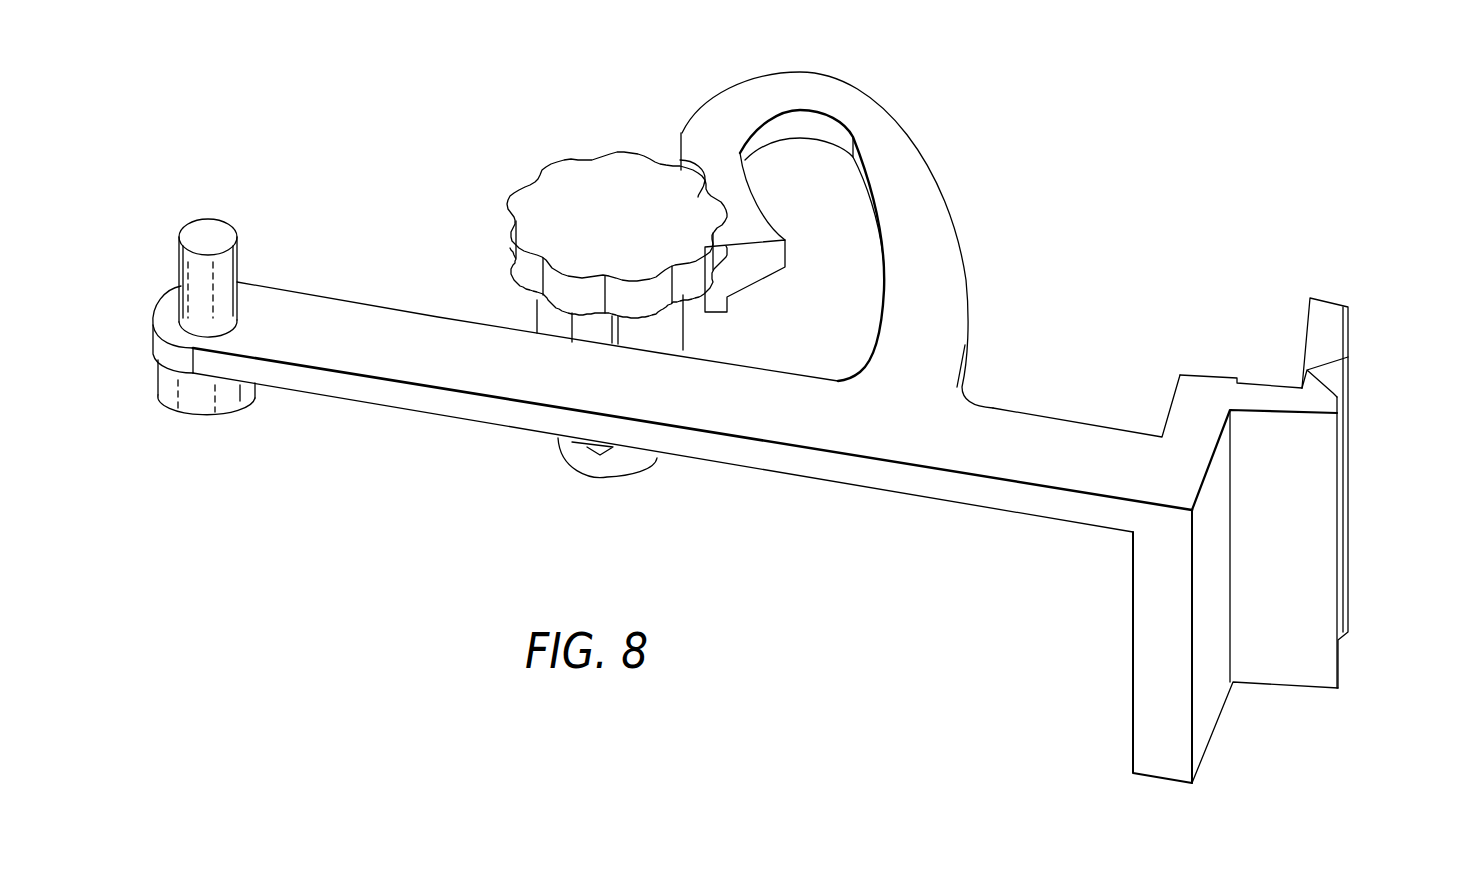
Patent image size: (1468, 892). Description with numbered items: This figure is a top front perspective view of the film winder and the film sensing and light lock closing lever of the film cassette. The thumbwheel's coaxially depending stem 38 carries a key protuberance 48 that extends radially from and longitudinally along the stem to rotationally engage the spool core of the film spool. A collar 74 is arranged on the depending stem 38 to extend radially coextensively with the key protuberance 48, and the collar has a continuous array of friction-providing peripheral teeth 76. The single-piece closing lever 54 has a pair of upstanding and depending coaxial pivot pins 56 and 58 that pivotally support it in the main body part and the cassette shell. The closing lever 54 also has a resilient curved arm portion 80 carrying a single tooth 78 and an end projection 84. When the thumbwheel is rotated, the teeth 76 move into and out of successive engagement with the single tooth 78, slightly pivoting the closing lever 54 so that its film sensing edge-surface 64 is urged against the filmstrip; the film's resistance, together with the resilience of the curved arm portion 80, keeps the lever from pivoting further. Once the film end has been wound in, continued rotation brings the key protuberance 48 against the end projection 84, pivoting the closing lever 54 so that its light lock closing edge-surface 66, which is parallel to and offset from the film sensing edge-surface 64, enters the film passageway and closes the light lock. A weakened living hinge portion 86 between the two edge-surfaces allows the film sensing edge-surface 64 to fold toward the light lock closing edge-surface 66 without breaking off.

The depending stem 38 is at (627, 477).
The key protuberance 48 is at (582, 325).
The closing lever 54 is at (402, 406).
The upstanding pivot pin 56 is at (195, 233).
The depending pivot pin 58 is at (203, 410).
The film sensing edge-surface 64 is at (1335, 298).
The light lock closing edge-surface 66 is at (1207, 375).
The collar 74 is at (533, 198).
The peripheral teeth 76 is at (517, 258).
The single tooth 78 is at (682, 132).
The resilient curved arm portion 80 is at (875, 95).
The end projection 84 is at (715, 298).
The weakened living hinge portion 86 is at (1335, 378).